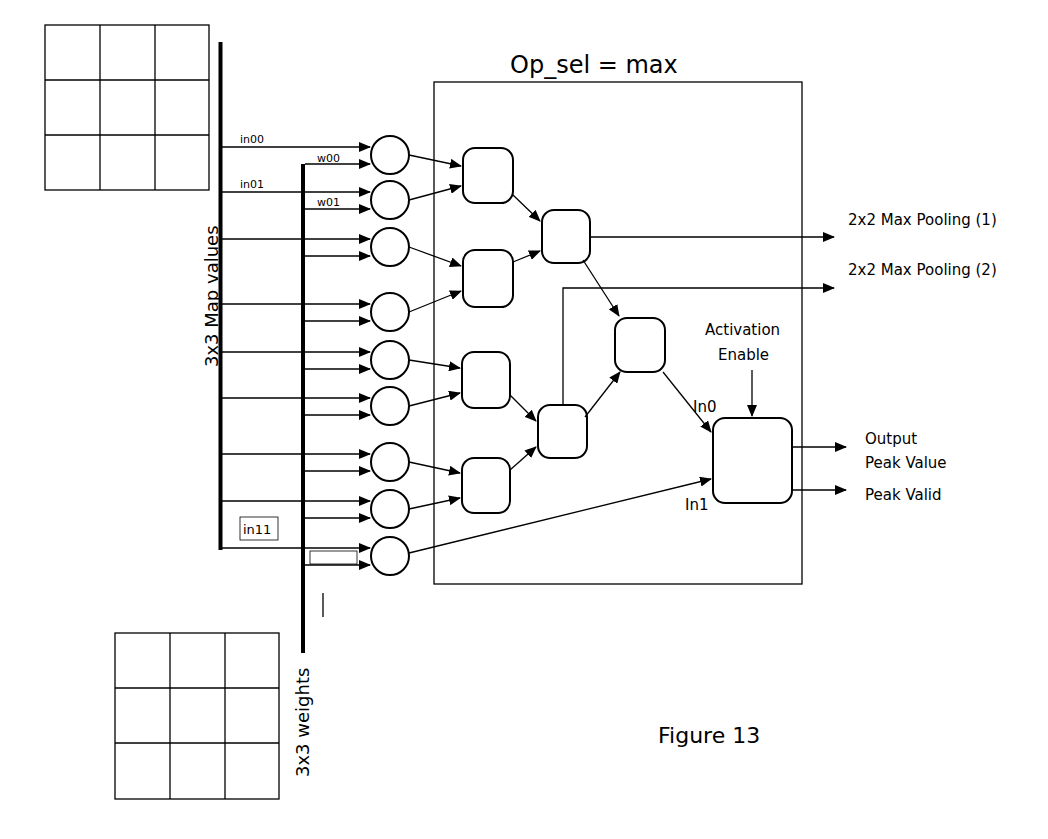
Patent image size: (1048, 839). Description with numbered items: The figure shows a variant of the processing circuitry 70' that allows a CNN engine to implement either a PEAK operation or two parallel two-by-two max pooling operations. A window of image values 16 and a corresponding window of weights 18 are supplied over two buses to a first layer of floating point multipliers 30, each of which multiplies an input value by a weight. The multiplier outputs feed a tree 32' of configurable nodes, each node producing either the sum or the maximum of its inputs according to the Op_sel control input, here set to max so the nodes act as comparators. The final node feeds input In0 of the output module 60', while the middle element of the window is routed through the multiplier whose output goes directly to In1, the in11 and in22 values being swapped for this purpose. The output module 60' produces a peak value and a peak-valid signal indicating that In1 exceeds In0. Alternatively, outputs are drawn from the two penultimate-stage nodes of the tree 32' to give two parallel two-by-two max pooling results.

The image values 16 is at (127, 122).
The 3x3 weights grid 18 is at (197, 725).
The floating point multipliers 30 is at (401, 583).
The tree of configurable nodes 32' is at (581, 312).
The output module 60' is at (752, 474).
The circuitry 70' is at (665, 375).